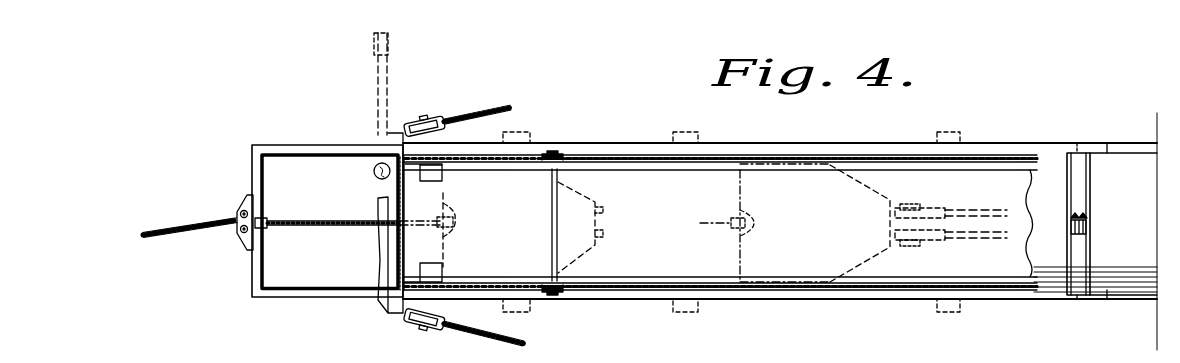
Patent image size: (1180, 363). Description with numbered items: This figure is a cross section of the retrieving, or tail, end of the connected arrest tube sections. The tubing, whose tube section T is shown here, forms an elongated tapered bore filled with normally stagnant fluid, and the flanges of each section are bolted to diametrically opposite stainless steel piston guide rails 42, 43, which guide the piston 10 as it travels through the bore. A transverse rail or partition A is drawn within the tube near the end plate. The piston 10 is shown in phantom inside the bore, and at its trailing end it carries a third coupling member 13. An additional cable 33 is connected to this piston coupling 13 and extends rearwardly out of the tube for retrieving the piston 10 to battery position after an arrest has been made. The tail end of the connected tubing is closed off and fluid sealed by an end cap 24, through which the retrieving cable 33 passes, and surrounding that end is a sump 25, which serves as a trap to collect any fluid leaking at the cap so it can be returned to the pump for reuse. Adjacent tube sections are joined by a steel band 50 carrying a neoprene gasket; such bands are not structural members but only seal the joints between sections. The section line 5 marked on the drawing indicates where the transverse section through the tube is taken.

The tubular housing T is at (700, 158).
The transverse rail / partition A is at (523, 155).
The piston 10 is at (563, 182).
The third coupling member 13 is at (449, 234).
The piston guide rail 43 is at (683, 167).
The piston guide rail 42 is at (655, 280).
The steel band 50 is at (1078, 186).
The end cap 24 is at (392, 280).
The sump 25 is at (287, 282).
The cable 33 is at (200, 228).
The section line 5- 5 is at (1144, 133).